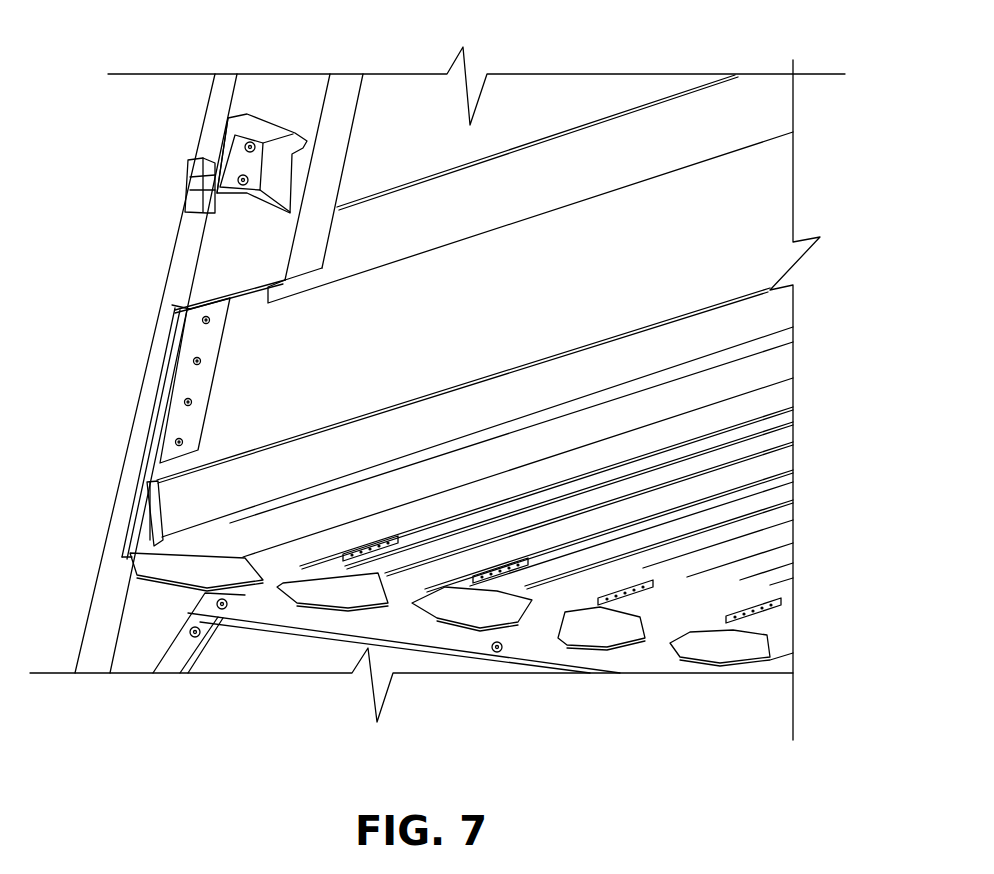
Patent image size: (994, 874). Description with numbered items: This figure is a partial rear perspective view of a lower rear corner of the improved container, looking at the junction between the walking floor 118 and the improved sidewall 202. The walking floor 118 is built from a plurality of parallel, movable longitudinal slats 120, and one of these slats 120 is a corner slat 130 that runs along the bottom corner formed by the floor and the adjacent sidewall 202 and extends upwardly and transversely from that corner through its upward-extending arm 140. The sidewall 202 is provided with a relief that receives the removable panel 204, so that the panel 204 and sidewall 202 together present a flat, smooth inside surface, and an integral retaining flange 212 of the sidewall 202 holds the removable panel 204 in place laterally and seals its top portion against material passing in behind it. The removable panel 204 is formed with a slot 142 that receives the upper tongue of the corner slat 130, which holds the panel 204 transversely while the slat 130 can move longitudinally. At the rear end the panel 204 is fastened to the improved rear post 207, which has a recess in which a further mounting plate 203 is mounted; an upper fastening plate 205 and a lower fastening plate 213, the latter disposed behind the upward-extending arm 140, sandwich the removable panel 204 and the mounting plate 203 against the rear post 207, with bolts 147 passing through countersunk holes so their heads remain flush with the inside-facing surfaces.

The walking floor 118 is at (525, 571).
The longitudinal slats 120 is at (340, 587).
The corner slat 130 is at (190, 572).
The upward-extending arm 140 is at (407, 446).
The slot 142 is at (524, 352).
The bolts 147 is at (183, 442).
The sidewall 202 is at (213, 134).
The mounting plate 203 is at (148, 430).
The removable panel 204 is at (463, 381).
The upper fastening plate 205 is at (190, 378).
The rear post 207 is at (178, 277).
The retaining flange 212 is at (515, 205).
The lower fastening plate 213 is at (150, 522).